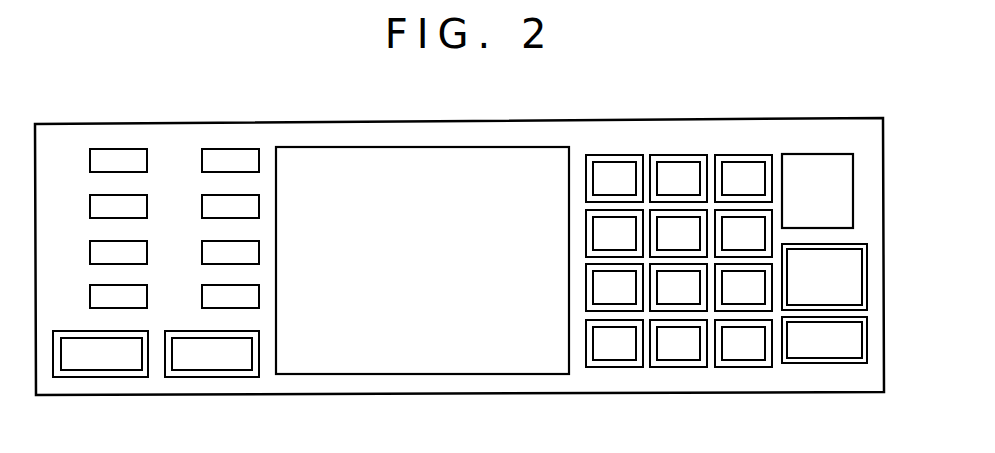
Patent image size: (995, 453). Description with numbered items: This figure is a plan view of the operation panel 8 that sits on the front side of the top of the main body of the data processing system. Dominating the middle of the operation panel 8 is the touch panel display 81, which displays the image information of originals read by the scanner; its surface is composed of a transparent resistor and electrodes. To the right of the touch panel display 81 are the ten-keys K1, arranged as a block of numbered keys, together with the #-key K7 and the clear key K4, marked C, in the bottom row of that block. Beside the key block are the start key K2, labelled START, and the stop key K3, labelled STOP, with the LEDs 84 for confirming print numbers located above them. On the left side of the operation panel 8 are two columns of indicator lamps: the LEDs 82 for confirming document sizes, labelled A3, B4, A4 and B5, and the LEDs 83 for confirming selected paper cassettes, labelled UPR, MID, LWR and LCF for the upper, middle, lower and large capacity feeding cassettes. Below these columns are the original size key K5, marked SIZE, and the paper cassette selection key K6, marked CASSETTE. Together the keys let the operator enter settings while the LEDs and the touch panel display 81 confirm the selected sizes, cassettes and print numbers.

The operation panel 8 is at (420, 122).
The touch panel display 81 is at (427, 374).
The LEDs for confirming document sizes 82 is at (119, 147).
The LEDs for confirming selected paper cassettes 83 is at (231, 147).
The LEDs for confirming print numbers 84 is at (809, 153).
The ten-keys K1 is at (666, 148).
The start key K2 is at (868, 272).
The stop key K3 is at (868, 331).
The clear key K4 is at (744, 367).
The original size key K5 is at (103, 377).
The paper cassette selection key K6 is at (213, 377).
The #-key K7 is at (680, 367).